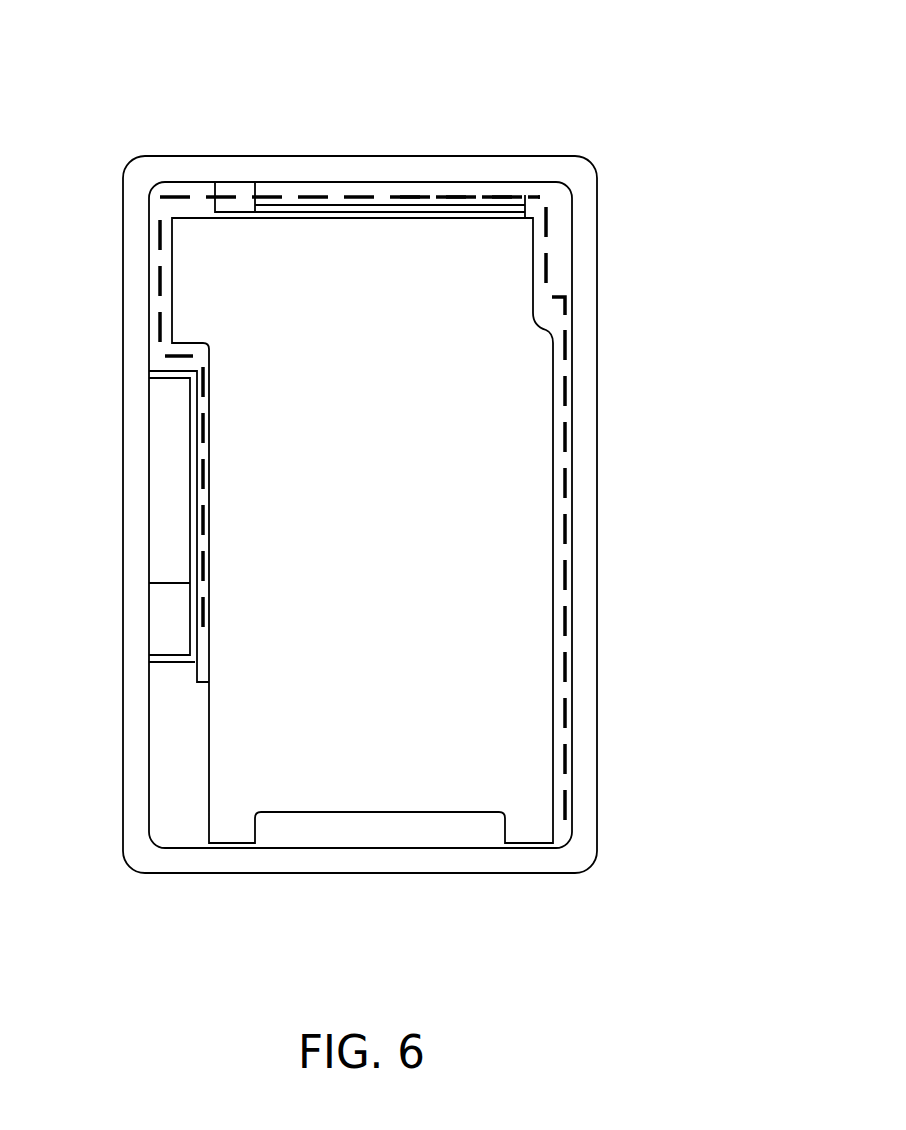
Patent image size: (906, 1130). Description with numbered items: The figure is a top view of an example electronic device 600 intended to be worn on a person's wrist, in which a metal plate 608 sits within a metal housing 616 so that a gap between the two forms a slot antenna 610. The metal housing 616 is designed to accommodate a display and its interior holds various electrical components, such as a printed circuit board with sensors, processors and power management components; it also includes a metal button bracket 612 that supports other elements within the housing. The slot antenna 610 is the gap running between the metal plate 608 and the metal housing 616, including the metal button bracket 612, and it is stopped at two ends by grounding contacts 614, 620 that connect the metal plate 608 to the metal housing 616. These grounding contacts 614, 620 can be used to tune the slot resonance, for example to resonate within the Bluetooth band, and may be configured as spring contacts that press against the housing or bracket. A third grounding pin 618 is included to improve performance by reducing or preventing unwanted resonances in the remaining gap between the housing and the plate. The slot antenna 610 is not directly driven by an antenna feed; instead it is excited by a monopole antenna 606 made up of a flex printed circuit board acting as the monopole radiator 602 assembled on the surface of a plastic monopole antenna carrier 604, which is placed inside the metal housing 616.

The electronic device 600 is at (731, 77).
The monopole radiator 602 is at (261, 212).
The monopole antenna carrier 604 is at (346, 186).
The monopole antenna 606 is at (469, 185).
The metal plate 608 is at (362, 530).
The slot antenna 610 is at (158, 285).
The metal button bracket 612 is at (190, 463).
The grounding contact 614 is at (200, 658).
The metal housing 616 is at (584, 461).
The third grounding pin 618 is at (225, 847).
The grounding contact 620 is at (523, 848).